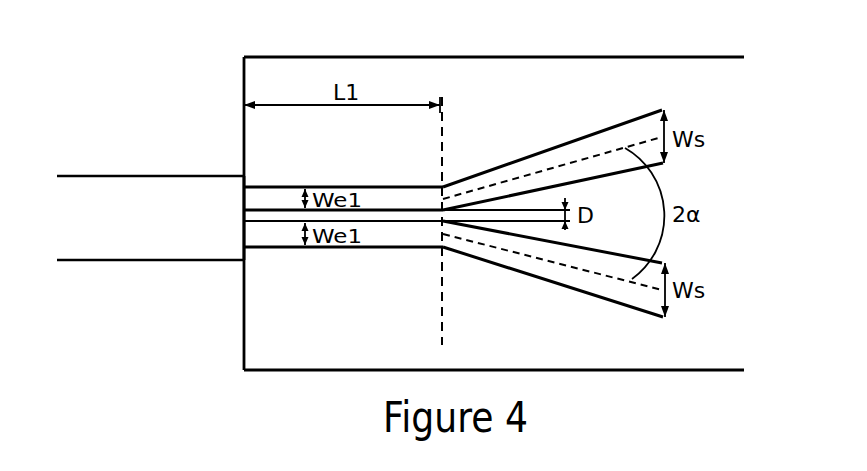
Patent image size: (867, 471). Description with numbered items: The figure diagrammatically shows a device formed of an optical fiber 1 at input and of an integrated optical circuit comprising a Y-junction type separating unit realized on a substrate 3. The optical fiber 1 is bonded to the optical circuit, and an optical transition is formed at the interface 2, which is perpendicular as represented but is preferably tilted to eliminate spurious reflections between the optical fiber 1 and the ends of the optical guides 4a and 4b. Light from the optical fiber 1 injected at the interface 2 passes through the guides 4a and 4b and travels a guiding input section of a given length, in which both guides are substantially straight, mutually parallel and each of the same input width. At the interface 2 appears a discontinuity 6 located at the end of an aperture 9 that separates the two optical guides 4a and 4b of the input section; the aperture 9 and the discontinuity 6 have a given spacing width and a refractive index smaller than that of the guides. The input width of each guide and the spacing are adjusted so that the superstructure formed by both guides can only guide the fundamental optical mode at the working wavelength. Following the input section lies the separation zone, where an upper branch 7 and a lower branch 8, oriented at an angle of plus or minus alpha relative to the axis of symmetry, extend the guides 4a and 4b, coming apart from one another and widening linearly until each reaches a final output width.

The optical fiber 1 is at (145, 212).
The interface 2 is at (244, 203).
The substrate 3 is at (290, 88).
The optical guide 4a is at (372, 200).
The optical guide 4b is at (373, 235).
The discontinuity 6 is at (244, 212).
The upper branch 7 is at (575, 153).
The lower branch 8 is at (577, 273).
The aperture 9 is at (283, 219).